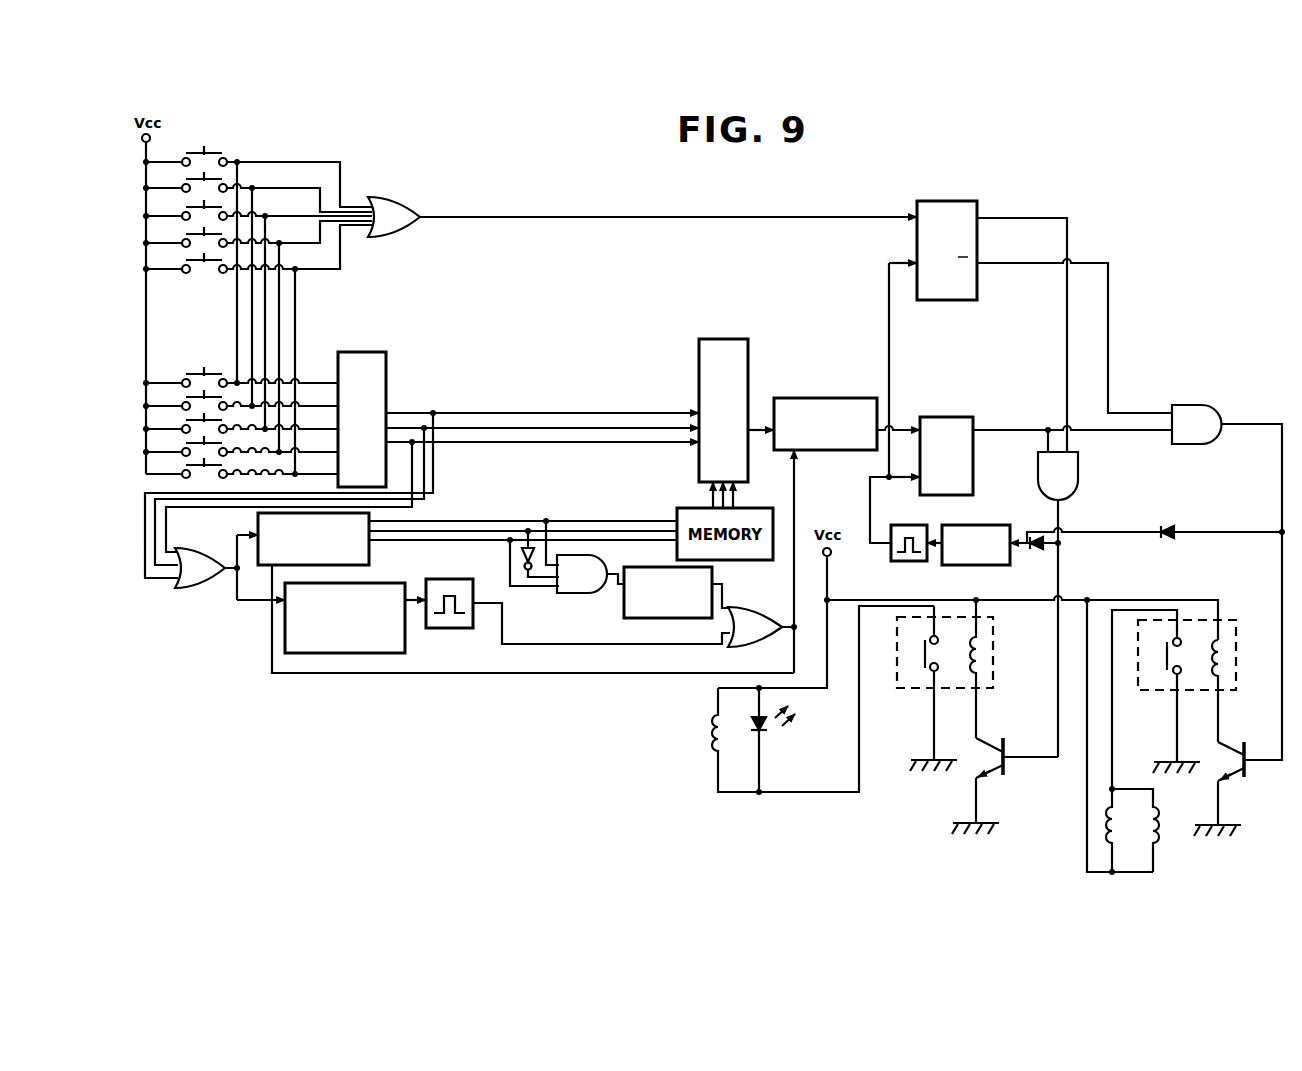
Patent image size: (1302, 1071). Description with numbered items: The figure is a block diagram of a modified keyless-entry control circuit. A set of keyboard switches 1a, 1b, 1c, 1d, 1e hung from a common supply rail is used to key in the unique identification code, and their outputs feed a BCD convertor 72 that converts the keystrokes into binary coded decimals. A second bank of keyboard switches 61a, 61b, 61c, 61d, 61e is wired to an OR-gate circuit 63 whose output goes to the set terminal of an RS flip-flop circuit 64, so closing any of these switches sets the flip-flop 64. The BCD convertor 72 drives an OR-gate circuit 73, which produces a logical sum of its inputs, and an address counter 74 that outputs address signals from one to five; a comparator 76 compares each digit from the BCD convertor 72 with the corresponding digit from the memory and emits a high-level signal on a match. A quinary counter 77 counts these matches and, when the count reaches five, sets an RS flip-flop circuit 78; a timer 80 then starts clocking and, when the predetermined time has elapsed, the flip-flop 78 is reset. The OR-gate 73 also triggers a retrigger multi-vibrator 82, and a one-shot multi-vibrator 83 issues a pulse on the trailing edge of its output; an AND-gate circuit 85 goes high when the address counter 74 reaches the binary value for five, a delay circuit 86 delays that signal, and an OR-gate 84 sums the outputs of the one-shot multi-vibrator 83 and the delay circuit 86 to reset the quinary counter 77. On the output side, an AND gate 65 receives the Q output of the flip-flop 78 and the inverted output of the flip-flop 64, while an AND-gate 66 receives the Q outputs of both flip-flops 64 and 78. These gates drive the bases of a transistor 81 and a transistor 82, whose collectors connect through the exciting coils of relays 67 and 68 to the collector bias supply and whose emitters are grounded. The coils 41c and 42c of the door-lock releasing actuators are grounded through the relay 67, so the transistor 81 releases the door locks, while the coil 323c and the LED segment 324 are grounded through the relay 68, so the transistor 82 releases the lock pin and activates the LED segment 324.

The keyboard switch 61a is at (212, 152).
The keyboard switch 61b is at (193, 178).
The keyboard switch 61c is at (193, 206).
The keyboard switch 61d is at (193, 233).
The keyboard switch 61e is at (198, 272).
The keyboard switch 1a is at (192, 372).
The keyboard switch 1b is at (187, 397).
The keyboard switch 1c is at (187, 420).
The keyboard switch 1d is at (187, 443).
The keyboard switch 1e is at (187, 465).
The OR-gate circuit 63 is at (388, 197).
The RS flip-flop circuit 64 is at (948, 201).
The AND-gate 65 is at (1193, 405).
The AND-gate 66 is at (1080, 477).
The relay 67 is at (1138, 690).
The relay 68 is at (900, 690).
The BCD convertor 72 is at (388, 374).
The OR-gate circuit 73 is at (207, 588).
The address counter 74 is at (258, 522).
The comparator 76 is at (748, 361).
The quinary counter 77 is at (815, 398).
The RS flip-flop circuit 78 is at (938, 417).
The timer 80 is at (975, 525).
The transistor 81 is at (912, 525).
The retrigger multi-vibrator 82 is at (390, 583).
The one-shot multi-vibrator 83 is at (448, 579).
The OR-gate 84 is at (750, 607).
The AND-gate circuit 85 is at (595, 595).
The delay circuit 86 is at (655, 618).
The coil 323c is at (706, 735).
The LED segment 324 is at (770, 731).
The actuator coil 41c is at (1104, 830).
The actuator coil 42c is at (1161, 823).